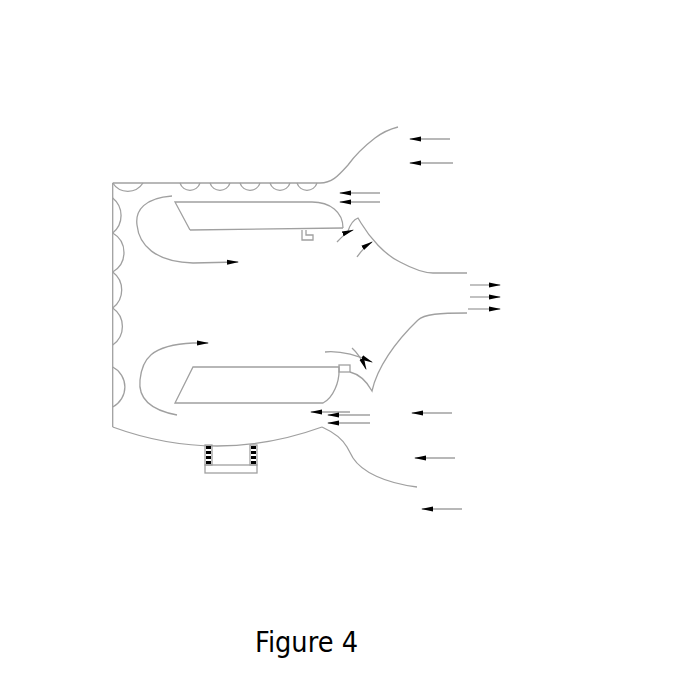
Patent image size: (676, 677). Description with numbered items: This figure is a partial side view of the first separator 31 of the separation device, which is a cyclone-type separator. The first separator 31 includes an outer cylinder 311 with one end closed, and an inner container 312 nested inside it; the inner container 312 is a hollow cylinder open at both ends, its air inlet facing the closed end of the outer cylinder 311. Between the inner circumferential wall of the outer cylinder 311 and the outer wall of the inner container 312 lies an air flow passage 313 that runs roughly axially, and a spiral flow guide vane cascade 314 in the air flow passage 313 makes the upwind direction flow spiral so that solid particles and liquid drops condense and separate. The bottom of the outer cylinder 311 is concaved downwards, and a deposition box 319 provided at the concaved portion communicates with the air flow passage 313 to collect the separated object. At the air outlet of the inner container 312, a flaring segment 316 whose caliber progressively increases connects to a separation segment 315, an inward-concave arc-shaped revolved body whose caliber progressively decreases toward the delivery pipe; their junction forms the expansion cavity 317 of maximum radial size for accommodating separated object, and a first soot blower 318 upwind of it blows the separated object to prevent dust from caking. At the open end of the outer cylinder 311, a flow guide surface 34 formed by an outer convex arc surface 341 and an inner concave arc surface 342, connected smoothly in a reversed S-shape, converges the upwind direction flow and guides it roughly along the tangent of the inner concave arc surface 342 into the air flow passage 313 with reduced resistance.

The first separator 31 is at (72, 277).
The outer cylinder 311 is at (147, 183).
The inner container 312 is at (215, 229).
The air flow passage 313 is at (213, 427).
The spiral flow guide vane cascade 314 is at (268, 217).
The separation segment 315 is at (397, 257).
The flaring segment 316 is at (342, 227).
The expansion cavity 317 is at (362, 235).
The first soot blower 318 is at (313, 237).
The deposition box 319 is at (206, 457).
The flow guide surface 34 is at (237, 503).
The outer convex arc surface 341 is at (353, 458).
The inner concave arc surface 342 is at (347, 447).